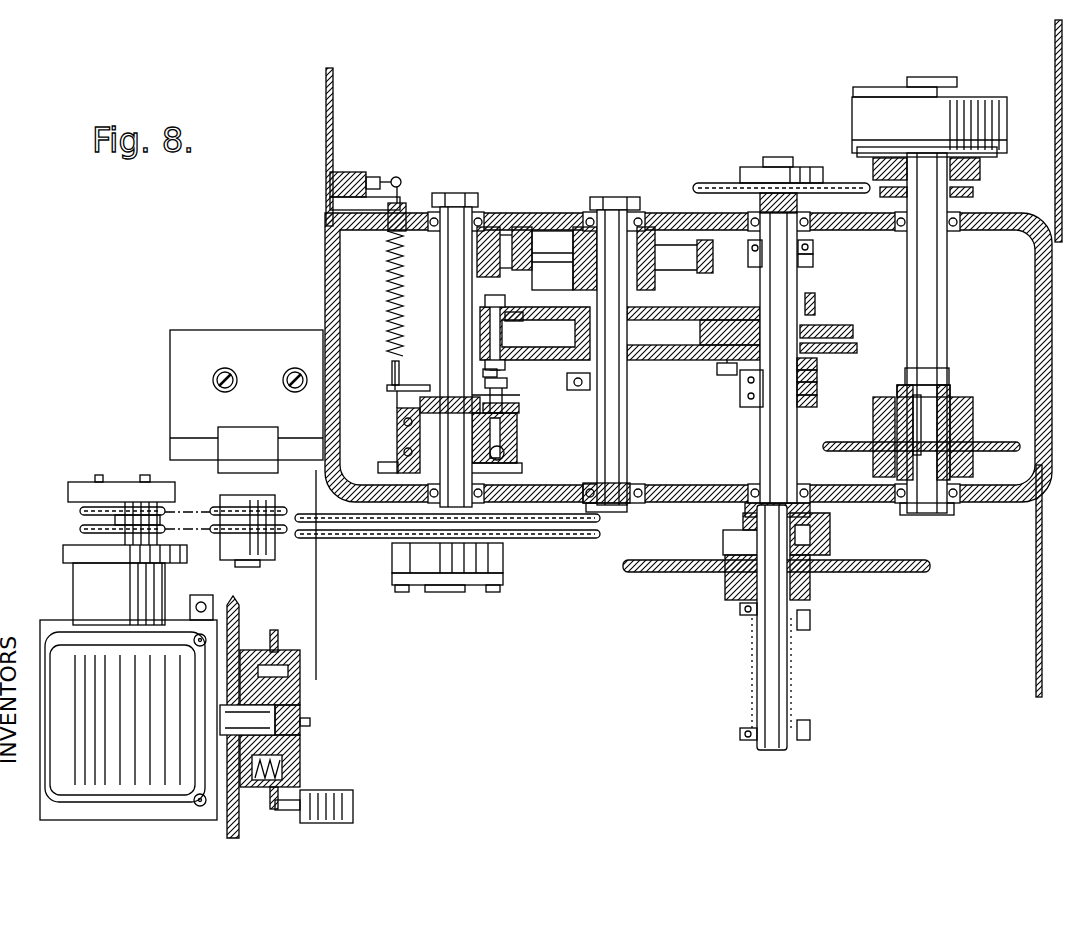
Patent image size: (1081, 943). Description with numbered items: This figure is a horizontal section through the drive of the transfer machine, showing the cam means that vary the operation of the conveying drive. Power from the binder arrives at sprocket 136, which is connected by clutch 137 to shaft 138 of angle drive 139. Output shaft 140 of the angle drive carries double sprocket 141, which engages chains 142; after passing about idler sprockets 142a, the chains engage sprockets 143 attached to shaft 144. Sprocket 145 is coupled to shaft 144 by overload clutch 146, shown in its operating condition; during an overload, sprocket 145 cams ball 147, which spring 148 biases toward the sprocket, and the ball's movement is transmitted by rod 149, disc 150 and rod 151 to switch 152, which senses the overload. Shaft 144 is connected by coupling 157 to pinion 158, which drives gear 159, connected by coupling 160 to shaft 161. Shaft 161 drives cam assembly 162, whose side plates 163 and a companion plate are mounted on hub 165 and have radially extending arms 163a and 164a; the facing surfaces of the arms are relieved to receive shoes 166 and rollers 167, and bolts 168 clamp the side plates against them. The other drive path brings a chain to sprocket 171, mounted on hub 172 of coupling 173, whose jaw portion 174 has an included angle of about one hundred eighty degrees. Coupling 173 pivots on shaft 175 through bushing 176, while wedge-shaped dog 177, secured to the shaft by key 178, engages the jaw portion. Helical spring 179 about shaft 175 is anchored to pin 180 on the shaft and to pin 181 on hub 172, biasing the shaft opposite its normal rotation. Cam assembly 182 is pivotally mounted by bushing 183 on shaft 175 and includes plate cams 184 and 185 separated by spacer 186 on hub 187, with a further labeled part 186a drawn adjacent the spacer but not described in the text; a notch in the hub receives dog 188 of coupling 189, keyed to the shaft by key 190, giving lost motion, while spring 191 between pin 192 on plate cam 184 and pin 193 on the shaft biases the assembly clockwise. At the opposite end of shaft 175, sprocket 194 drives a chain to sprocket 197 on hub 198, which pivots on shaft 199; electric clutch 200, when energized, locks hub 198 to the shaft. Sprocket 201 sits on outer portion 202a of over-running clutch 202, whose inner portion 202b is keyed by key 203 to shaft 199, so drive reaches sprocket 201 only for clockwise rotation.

The sprocket 136 is at (241, 603).
The clutch 137 is at (306, 712).
The shaft 138 is at (300, 725).
The angle drive 139 is at (127, 718).
The output shaft 140 is at (115, 540).
The double sprocket 141 is at (82, 513).
The chains 142 is at (182, 530).
The idler sprockets 142a is at (283, 527).
The sprockets 143 is at (566, 540).
The shaft 144 is at (440, 515).
The sprocket 145 is at (395, 470).
The overload clutch 146 is at (545, 443).
The ball 147 is at (522, 456).
The spring 148 is at (514, 410).
The rod 149 is at (507, 394).
The disc 150 is at (398, 392).
The rod 151 is at (395, 283).
The switch 152 is at (360, 172).
The coupling 157 is at (420, 290).
The pinion 158 is at (495, 237).
The gear 159 is at (713, 256).
The coupling 160 is at (562, 290).
The shaft 161 is at (622, 432).
The cam assembly 162 is at (646, 370).
The side plate 163 is at (688, 310).
The arm 163a is at (513, 316).
The arm 164a is at (503, 365).
The hub 165 is at (693, 339).
The shoes 166 is at (523, 336).
The rollers 167 is at (480, 323).
The bolts 168 is at (720, 347).
The sprocket 171 is at (648, 573).
The hub 172 is at (812, 580).
The coupling 173 is at (732, 574).
The jaw portion 174 is at (728, 536).
The shaft 175 is at (782, 663).
The bushing 176 is at (742, 600).
The dog 177 is at (831, 532).
The key 178 is at (790, 493).
The helical spring 179 is at (750, 708).
The pin 180 is at (810, 723).
The pin 181 is at (812, 621).
The cam assembly 182 is at (850, 325).
The bushing 183 is at (812, 396).
The plate cam 184 is at (854, 333).
The plate cam 185 is at (922, 383).
The spacer 186 is at (820, 345).
The lower plate 186a is at (820, 352).
The hub 187 is at (728, 378).
The dog 188 is at (816, 372).
The coupling 189 is at (803, 408).
The key 190 is at (776, 405).
The spring 191 is at (812, 270).
The pin 192 is at (812, 306).
The pin 193 is at (815, 262).
The sprocket 194 is at (698, 183).
The sprocket 197 is at (985, 193).
The hub 198 is at (982, 172).
The shaft 199 is at (947, 258).
The electric clutch 200 is at (860, 118).
The sprocket 201 is at (995, 452).
The over-running clutch 202 is at (972, 412).
The outer portion 202a is at (966, 421).
The inner portion 202b is at (932, 410).
The key 203 is at (926, 397).